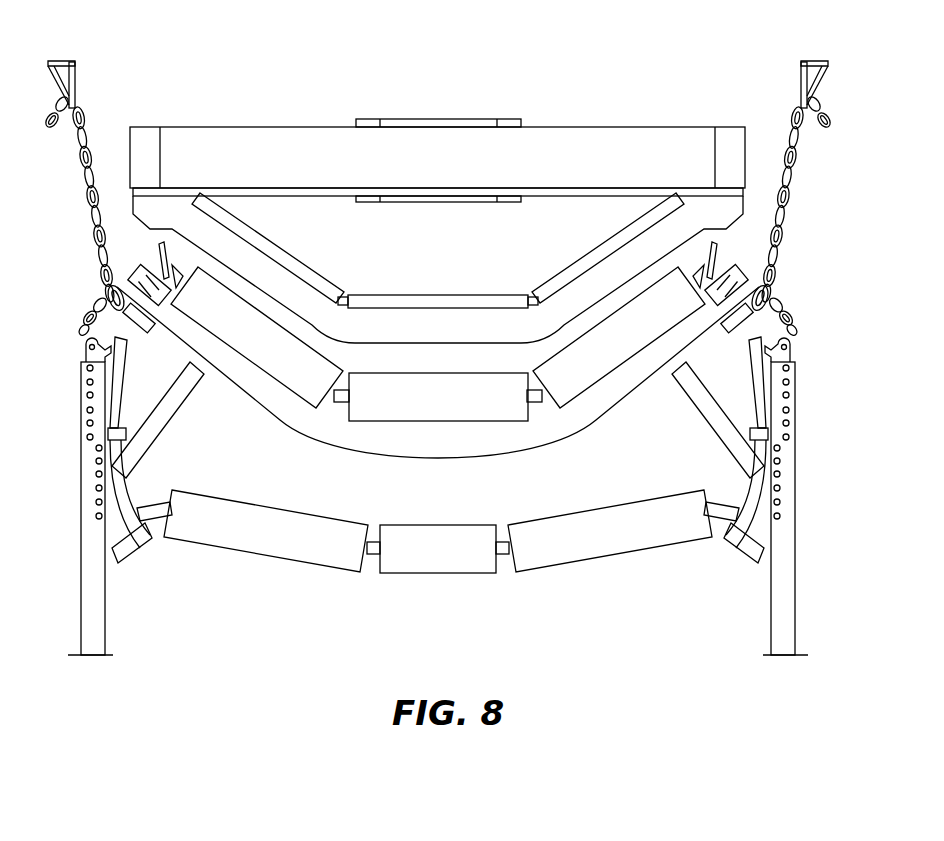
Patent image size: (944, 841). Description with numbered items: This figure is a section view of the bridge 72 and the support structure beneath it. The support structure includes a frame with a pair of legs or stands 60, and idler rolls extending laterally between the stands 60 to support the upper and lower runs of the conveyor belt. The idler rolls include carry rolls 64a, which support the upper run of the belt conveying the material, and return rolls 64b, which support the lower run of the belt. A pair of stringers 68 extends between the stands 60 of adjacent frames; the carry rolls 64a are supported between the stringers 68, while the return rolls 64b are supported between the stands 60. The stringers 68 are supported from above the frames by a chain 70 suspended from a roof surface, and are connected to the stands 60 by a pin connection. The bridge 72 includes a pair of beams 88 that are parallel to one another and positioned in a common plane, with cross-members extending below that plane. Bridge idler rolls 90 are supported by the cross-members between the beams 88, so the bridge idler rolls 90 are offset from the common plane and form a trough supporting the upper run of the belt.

The stands 60 is at (95, 612).
The carry rolls 64a is at (293, 374).
The return rolls 64b is at (309, 547).
The stringers 68 is at (140, 275).
The chain 70 is at (78, 148).
The bridge 72 is at (660, 84).
The beams 88 is at (144, 150).
The bridge idler rolls 90 is at (291, 263).